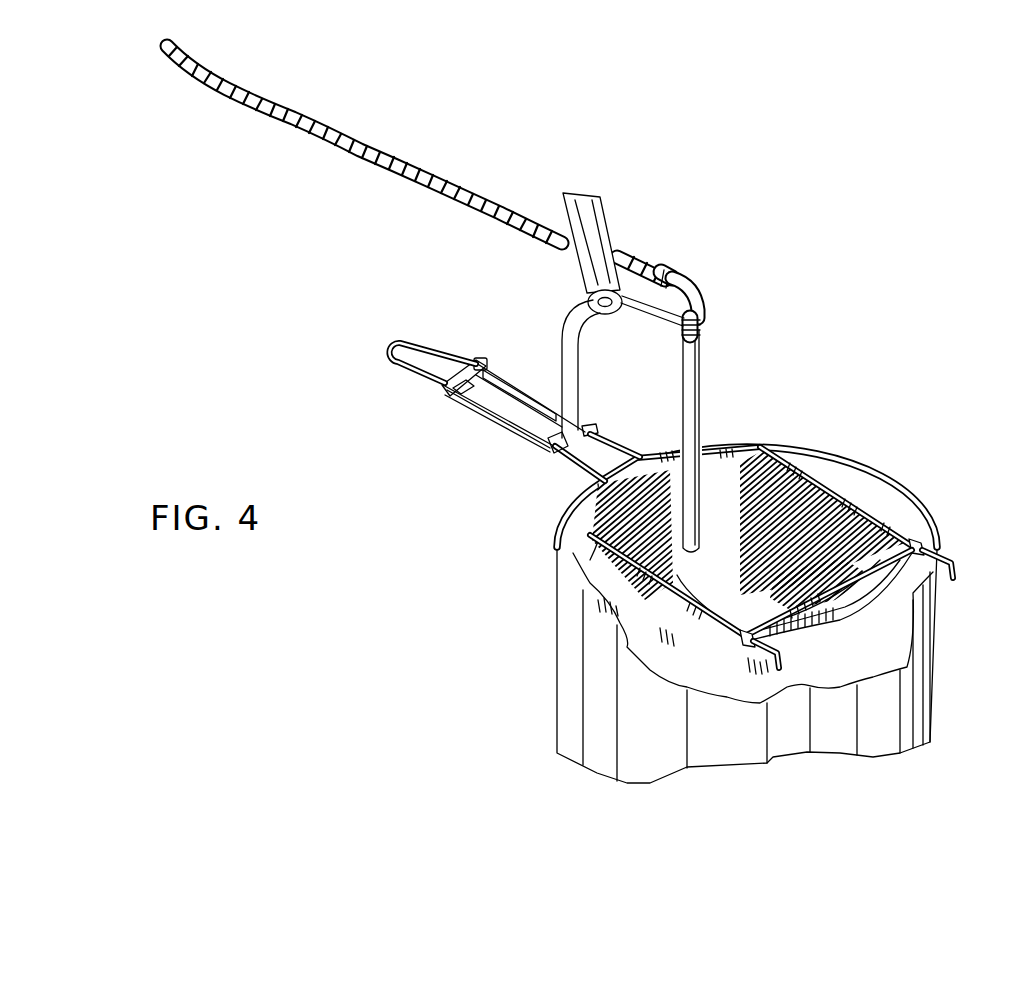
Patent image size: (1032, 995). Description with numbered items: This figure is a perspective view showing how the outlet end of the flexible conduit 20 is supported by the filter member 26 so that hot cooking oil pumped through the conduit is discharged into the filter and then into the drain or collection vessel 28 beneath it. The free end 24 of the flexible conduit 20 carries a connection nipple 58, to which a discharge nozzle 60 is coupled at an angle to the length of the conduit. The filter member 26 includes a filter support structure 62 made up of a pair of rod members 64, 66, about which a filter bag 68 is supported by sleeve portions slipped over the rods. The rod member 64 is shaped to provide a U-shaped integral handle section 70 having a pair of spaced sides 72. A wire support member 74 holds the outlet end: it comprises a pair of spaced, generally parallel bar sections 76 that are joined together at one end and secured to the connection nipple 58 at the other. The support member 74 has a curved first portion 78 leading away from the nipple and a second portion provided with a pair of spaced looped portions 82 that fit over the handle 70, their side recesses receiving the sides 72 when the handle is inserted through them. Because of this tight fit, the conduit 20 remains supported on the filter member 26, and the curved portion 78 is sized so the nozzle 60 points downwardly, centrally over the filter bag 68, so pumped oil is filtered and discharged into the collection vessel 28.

The flexible conduit 20 is at (353, 138).
The free end 24 is at (668, 270).
The filter member 26 is at (548, 485).
The collection vessel 28 is at (937, 647).
The connection nipple 58 is at (700, 292).
The discharge nozzle 60 is at (700, 377).
The filter support structure 62 is at (764, 446).
The rod member 64 is at (590, 472).
The rod member 66 is at (790, 640).
The filter bag 68 is at (828, 512).
The integral handle section 70 is at (425, 342).
The spaced sides 72 is at (537, 380).
The support member 74 is at (565, 300).
The bar sections 76 is at (590, 334).
The first portion 78 is at (643, 313).
The looped portions 82 is at (482, 356).